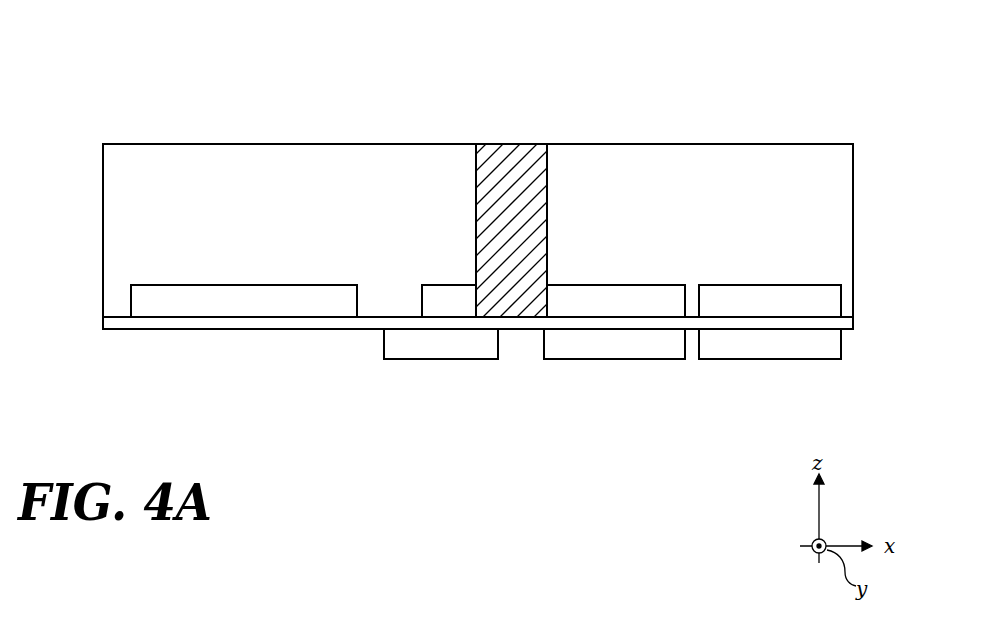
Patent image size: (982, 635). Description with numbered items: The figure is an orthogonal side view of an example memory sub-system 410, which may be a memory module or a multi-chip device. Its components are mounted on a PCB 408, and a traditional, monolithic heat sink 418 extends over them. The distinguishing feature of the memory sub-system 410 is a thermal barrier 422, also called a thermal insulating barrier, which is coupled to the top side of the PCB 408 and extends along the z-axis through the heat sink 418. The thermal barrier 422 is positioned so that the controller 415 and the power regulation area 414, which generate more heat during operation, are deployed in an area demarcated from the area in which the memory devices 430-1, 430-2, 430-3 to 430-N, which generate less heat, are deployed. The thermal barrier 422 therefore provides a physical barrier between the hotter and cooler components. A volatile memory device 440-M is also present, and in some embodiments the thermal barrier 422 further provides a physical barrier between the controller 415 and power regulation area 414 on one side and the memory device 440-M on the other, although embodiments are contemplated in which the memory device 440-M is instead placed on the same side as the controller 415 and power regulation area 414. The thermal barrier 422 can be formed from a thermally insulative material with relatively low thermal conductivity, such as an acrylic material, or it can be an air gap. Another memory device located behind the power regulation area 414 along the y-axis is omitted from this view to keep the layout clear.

The memory sub-system 410 is at (149, 70).
The heat sink 418 is at (103, 190).
The PCB 408 is at (103, 322).
The thermal barrier 422 is at (504, 146).
The controller 415 is at (159, 302).
The power regulation area 414 is at (464, 307).
The memory device 430-1 is at (573, 303).
The memory device 430-2 is at (824, 305).
The memory device 430-3 is at (650, 345).
The memory device 430-N is at (737, 345).
The memory device 440-M is at (396, 348).